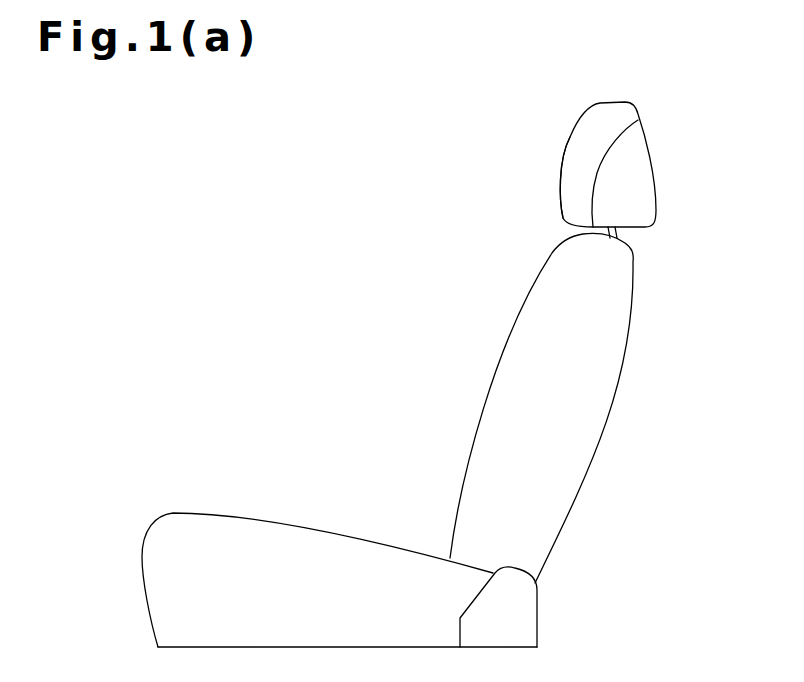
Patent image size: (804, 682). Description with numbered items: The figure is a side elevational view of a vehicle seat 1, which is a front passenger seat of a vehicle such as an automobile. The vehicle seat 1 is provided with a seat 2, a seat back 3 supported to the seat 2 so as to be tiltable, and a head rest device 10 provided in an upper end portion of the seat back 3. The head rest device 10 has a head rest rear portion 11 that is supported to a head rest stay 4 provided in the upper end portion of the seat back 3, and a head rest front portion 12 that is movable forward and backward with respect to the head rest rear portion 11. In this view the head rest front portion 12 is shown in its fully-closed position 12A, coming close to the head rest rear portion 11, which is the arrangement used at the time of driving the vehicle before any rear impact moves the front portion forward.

The vehicle seat 1 is at (275, 319).
The seat 2 is at (315, 527).
The seat back 3 is at (507, 337).
The head rest stay 4 is at (618, 232).
The head rest device 10 is at (552, 143).
The head rest rear portion 11 is at (653, 154).
The head rest front portion 12 is at (606, 103).
The fully-closed position 12A is at (558, 181).